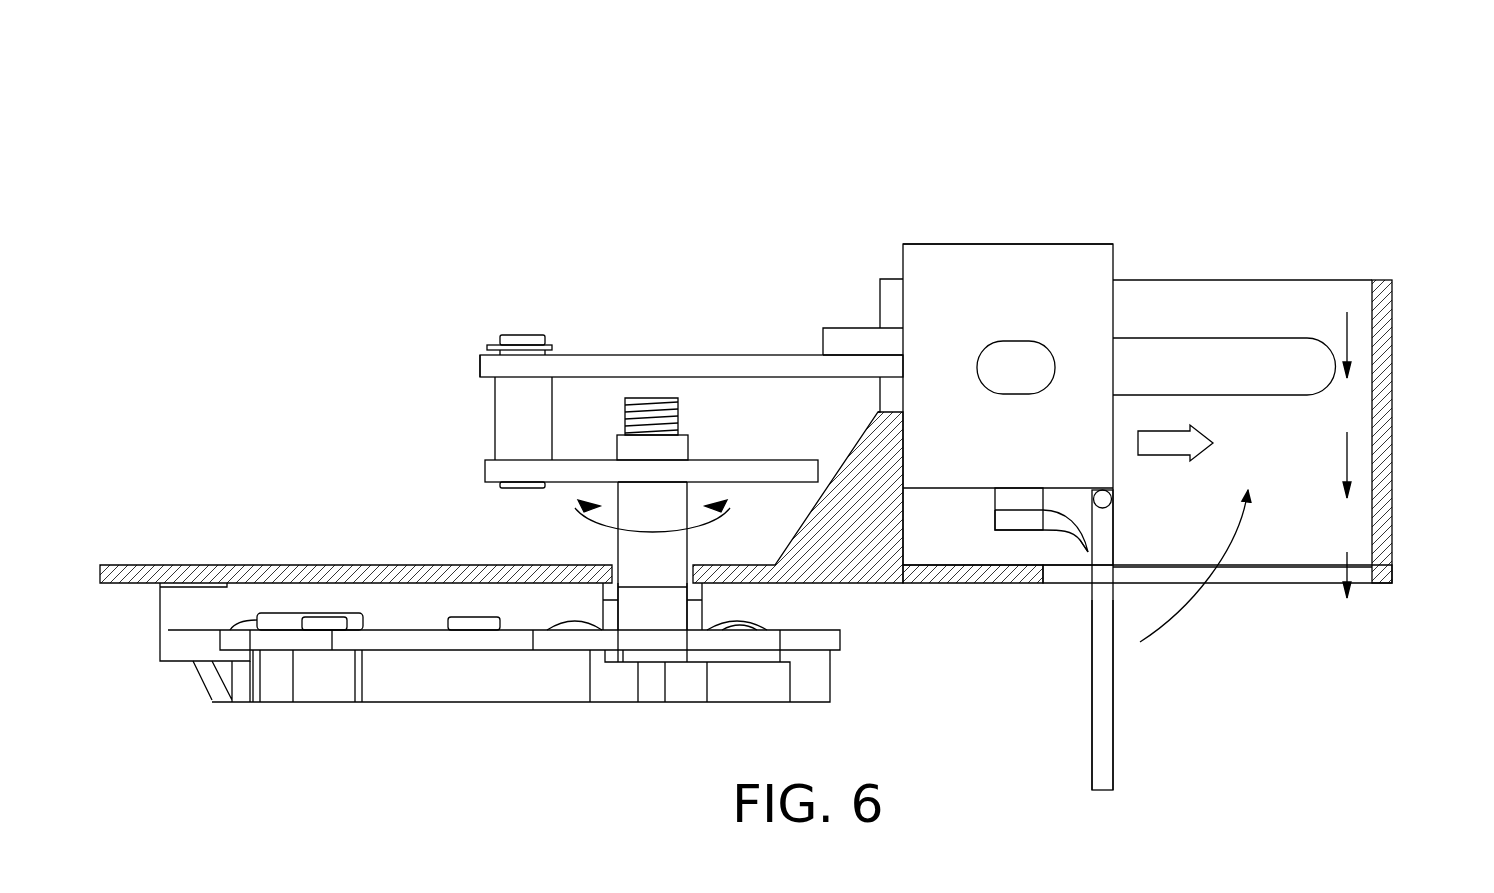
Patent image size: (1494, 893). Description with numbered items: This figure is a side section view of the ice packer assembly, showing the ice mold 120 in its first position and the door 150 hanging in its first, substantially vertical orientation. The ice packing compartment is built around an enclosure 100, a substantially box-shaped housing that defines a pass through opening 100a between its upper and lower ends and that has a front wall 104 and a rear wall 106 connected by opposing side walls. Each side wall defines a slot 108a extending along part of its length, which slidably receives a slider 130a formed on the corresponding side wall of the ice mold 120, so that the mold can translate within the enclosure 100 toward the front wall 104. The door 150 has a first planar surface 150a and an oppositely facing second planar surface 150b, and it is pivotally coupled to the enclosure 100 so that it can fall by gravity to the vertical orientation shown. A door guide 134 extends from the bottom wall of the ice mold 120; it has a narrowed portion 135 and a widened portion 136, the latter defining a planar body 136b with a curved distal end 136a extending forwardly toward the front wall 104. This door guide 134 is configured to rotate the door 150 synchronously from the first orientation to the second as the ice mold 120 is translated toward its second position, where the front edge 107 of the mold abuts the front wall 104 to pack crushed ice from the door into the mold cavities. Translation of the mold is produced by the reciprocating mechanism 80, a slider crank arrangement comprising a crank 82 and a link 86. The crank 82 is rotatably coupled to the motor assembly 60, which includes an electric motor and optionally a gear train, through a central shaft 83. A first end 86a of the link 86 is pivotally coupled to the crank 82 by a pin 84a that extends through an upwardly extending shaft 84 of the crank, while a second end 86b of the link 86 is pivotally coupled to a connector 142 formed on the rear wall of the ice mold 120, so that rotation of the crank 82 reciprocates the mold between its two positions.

The motor assembly 60 is at (230, 715).
The reciprocating mechanism 80 is at (609, 459).
The crank 82 is at (485, 471).
The central shaft 83 is at (620, 543).
The upwardly extending shaft 84 is at (496, 418).
The pin 84a is at (520, 333).
The link 86 is at (692, 363).
The first end of the link 86a is at (560, 340).
The second end of the link 86b is at (812, 345).
The connector 142 is at (848, 330).
The rear wall 106 is at (890, 279).
The front edge of the ice mold 107 is at (1113, 250).
The ice mold 120 is at (1050, 335).
The slider 130a is at (1014, 350).
The narrowed portion 135 is at (1017, 497).
The widened portion 136 is at (1076, 532).
The curved distal end 136a is at (1095, 542).
The planar body 136b is at (1018, 520).
The door guide 134 is at (985, 538).
The enclosure 100 is at (1256, 405).
The pass through opening 100a is at (1302, 575).
The front wall 104 is at (1392, 337).
The slot 108a is at (1218, 353).
The door 150 is at (1137, 640).
The first planar surface 150a is at (1113, 753).
The second planar surface 150b is at (1092, 702).